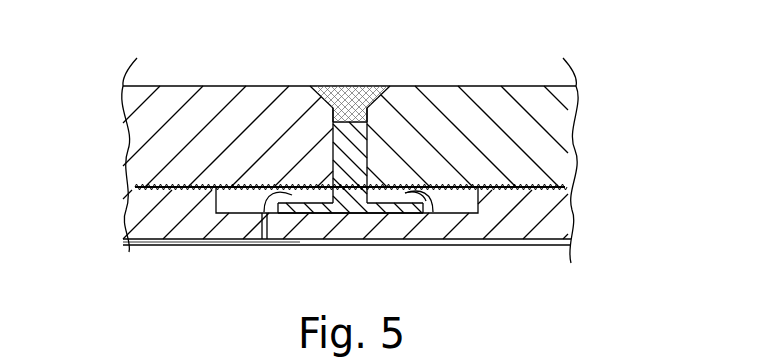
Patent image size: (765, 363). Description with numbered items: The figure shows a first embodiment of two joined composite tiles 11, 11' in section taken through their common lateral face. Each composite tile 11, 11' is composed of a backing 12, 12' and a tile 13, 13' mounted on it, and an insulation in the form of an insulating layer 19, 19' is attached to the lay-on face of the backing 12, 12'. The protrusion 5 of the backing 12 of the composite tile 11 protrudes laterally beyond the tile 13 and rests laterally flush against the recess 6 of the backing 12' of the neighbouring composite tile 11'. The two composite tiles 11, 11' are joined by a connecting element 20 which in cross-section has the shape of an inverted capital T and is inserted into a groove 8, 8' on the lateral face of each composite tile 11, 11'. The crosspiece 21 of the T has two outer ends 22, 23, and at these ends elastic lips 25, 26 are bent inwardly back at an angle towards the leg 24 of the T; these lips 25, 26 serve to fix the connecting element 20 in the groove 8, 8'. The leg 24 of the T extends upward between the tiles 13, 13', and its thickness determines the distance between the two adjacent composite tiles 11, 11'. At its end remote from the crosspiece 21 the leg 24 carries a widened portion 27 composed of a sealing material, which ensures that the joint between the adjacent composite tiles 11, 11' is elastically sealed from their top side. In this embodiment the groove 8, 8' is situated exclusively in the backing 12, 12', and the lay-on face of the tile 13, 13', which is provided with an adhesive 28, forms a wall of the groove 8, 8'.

The protrusion 5 is at (338, 223).
The recess 6 is at (195, 228).
The groove 8 is at (439, 245).
The groove 8' is at (255, 246).
The composite tile 11 is at (391, 160).
The composite tile 11' is at (90, 155).
The backing 12 is at (391, 213).
The backing 12' is at (107, 214).
The tile 13 is at (467, 101).
The tile 13' is at (228, 101).
The insulating layer 19 is at (391, 253).
The insulating layer 19' is at (211, 271).
The connecting element 20 is at (322, 73).
The crosspiece 21 is at (387, 210).
The outer end 22 is at (428, 207).
The outer end 23 is at (275, 205).
The leg 24 is at (358, 152).
The elastic lip 25 is at (413, 162).
The elastic lip 26 is at (280, 173).
The widened portion 27 is at (334, 86).
The adhesive 28 is at (565, 178).